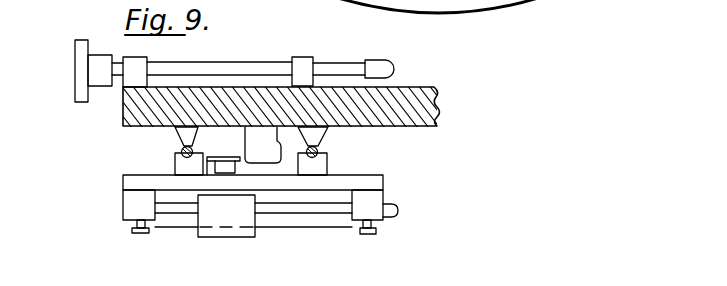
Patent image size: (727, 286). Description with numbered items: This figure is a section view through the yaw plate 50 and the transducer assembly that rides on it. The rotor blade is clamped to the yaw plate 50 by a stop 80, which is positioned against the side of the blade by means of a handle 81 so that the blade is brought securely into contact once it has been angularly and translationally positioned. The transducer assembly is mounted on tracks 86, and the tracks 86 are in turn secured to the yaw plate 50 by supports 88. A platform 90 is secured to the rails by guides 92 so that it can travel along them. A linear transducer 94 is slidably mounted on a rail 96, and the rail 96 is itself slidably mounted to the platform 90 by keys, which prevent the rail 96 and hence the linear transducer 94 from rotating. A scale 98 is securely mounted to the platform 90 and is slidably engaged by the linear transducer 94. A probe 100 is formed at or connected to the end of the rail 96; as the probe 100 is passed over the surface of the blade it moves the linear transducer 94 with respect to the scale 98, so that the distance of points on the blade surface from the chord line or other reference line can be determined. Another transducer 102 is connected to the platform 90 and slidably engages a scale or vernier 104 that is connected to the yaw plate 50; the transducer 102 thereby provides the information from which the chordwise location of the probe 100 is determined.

The yaw plate 50 is at (440, 103).
The stop 80 is at (393, 67).
The handle 81 is at (85, 78).
The tracks 86 is at (182, 151).
The supports 88 is at (327, 133).
The platform 90 is at (125, 180).
The guides 92 is at (322, 163).
The linear transducer 94 is at (225, 218).
The rail 96 is at (293, 207).
The scale 98 is at (337, 227).
The probe 100 is at (396, 212).
The transducer 102 is at (230, 166).
The scale or vernier 104 is at (262, 135).